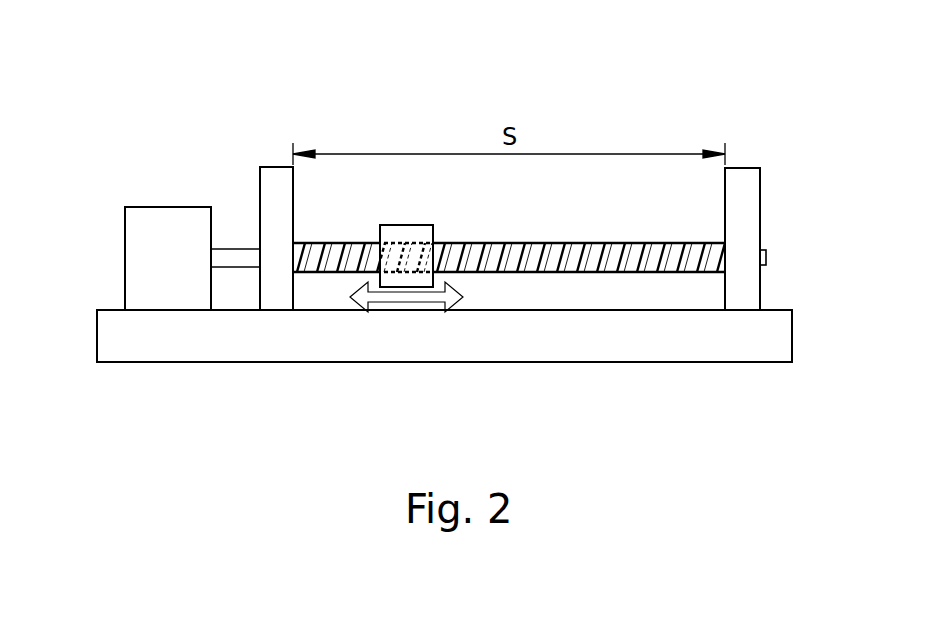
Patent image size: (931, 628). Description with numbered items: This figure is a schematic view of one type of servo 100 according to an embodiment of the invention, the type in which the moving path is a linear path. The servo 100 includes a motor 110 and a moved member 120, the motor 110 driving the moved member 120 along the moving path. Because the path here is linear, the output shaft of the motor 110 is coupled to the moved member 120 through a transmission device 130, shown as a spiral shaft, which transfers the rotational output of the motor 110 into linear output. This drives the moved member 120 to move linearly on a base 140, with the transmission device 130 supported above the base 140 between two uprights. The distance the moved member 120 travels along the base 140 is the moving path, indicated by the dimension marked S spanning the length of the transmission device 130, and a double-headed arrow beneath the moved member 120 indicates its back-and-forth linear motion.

The servo 100 is at (213, 140).
The motor 110 is at (125, 240).
The moved member 120 is at (419, 224).
The transmission device 130 is at (610, 243).
The base 140 is at (571, 363).